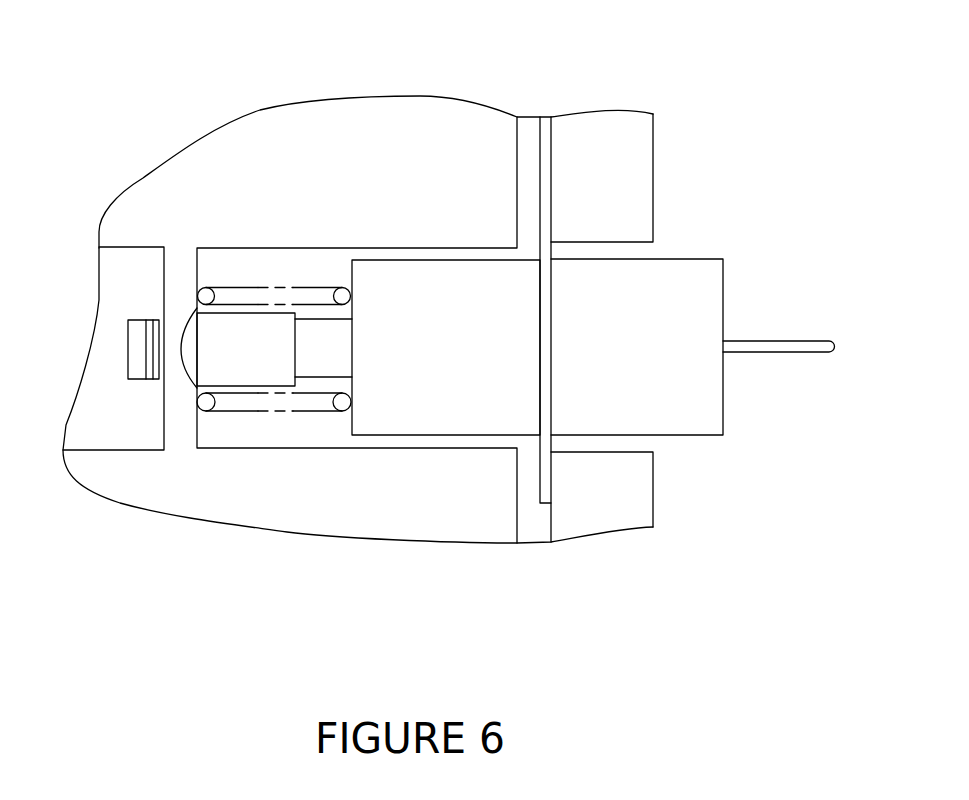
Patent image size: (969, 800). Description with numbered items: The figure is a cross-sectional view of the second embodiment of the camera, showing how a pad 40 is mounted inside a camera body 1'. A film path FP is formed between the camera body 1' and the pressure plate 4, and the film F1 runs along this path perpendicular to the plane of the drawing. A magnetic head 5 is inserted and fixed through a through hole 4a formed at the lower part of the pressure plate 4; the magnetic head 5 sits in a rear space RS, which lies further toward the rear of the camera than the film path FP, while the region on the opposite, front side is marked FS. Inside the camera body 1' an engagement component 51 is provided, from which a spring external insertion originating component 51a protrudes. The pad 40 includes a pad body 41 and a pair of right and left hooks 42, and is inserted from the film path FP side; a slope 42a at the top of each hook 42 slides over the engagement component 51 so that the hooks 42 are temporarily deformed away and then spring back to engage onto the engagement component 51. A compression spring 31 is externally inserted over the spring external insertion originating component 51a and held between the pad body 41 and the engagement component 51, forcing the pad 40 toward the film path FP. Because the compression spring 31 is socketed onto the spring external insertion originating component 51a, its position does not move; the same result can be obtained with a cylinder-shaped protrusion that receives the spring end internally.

The camera body 1' is at (358, 285).
The film path FP is at (527, 125).
The film F1 is at (545, 142).
The pressure plate 4 is at (653, 147).
The through hole 4a is at (633, 251).
The magnetic head 5 is at (723, 402).
The compression spring 31 is at (240, 287).
The pad body 41 is at (419, 283).
The hooks 42 is at (317, 335).
The slope 42a is at (140, 353).
The pad 40 is at (373, 435).
The engagement component 51 is at (163, 420).
The spring external insertion originating component 51a is at (232, 368).
The front side FS is at (450, 502).
The rear space RS is at (711, 502).